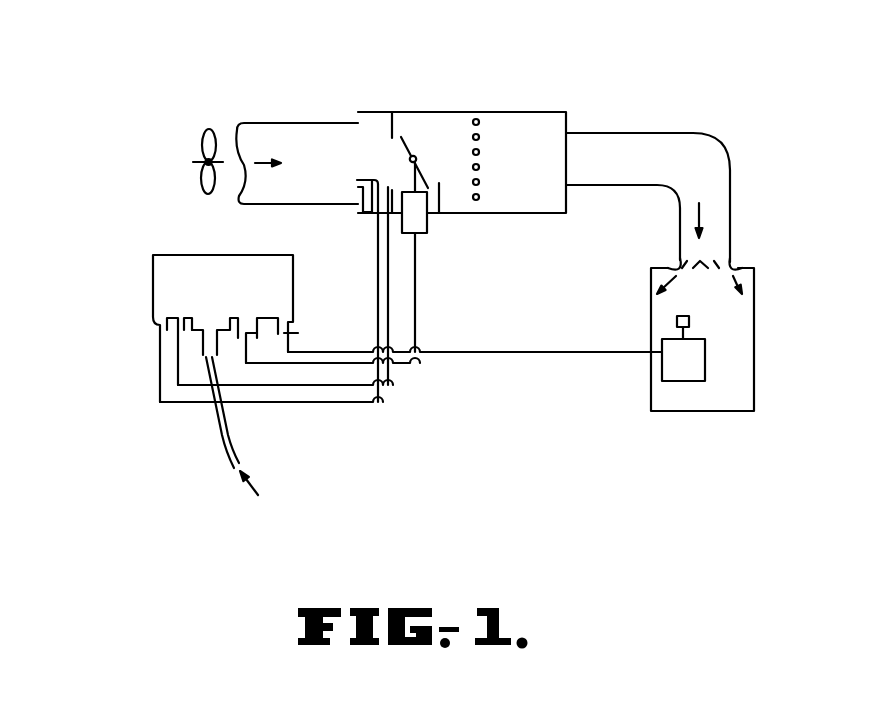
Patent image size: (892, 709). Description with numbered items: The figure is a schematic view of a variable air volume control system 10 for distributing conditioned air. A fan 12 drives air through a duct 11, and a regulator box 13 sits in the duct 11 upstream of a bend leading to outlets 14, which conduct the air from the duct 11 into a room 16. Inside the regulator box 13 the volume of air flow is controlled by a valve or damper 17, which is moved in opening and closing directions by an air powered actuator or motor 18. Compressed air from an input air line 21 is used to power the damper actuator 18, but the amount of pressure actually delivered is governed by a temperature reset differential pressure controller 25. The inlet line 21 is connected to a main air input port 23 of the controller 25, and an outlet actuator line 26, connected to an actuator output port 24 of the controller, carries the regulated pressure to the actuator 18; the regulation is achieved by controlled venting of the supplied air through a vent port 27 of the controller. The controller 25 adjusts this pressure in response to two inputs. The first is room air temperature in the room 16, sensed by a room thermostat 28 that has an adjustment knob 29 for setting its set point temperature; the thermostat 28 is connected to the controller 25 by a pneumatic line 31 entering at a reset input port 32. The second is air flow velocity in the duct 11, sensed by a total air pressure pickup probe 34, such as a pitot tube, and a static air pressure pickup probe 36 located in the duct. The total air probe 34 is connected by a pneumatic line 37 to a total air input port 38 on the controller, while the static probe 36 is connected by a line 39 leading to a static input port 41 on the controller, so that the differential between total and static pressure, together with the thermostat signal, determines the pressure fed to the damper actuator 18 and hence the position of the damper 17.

The variable air volume control system 10 is at (489, 82).
The duct 11 is at (720, 152).
The fan 12 is at (203, 142).
The regulator box 13 is at (540, 110).
The outlets 14 is at (667, 268).
The room 16 is at (718, 359).
The damper 17 is at (412, 142).
The air powered actuator 18 is at (427, 234).
The input air line 21 is at (222, 435).
The main air input port 23 is at (207, 350).
The actuator output port 24 is at (249, 338).
The temperature reset differential pressure controller 25 is at (153, 287).
The outlet actuator line 26 is at (417, 323).
The vent port 27 is at (263, 318).
The room thermostat 28 is at (683, 381).
The adjustment knob 29 is at (683, 316).
The pneumatic line 31 is at (500, 353).
The reset input port 32 is at (298, 333).
The total air pressure pickup probe 34 is at (357, 181).
The static air pressure pickup probe 36 is at (394, 192).
The pneumatic line 37 is at (377, 258).
The total air input port 38 is at (157, 327).
The line 39 is at (393, 342).
The static input port 41 is at (181, 317).